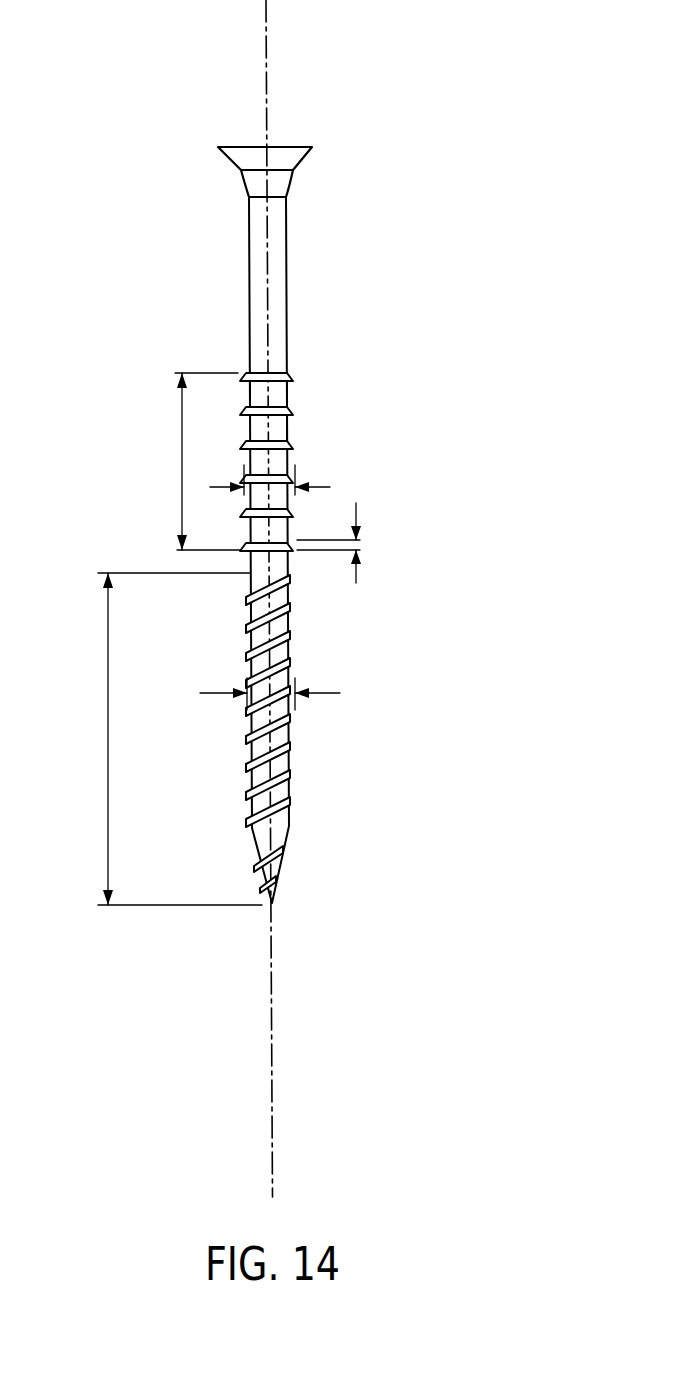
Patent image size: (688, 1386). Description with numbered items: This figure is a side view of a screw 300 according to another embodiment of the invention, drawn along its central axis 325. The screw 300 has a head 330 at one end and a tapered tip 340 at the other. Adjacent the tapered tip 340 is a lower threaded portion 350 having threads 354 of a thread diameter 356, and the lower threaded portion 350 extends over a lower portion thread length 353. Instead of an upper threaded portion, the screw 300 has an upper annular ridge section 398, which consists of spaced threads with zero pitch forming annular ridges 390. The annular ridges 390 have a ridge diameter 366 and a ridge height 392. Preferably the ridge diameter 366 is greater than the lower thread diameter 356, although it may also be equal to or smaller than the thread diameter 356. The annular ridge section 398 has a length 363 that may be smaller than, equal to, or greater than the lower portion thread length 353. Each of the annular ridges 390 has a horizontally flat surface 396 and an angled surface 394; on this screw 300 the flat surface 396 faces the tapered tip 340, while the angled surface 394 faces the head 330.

The screw 300 is at (484, 281).
The longitudinal axis 325 is at (273, 1032).
The head 330 is at (298, 146).
The tapered tip 340 is at (272, 874).
The lower threaded portion 350 is at (277, 757).
The lower portion thread length 353 is at (108, 738).
The threads 354 is at (290, 797).
The thread diameter 356 is at (213, 694).
The length 363 is at (182, 452).
The ridge diameter 366 is at (315, 487).
The annular ridges 390 is at (286, 376).
The ridge height 392 is at (357, 516).
The angled surface 394 is at (290, 410).
The horizontally flat surface 396 is at (291, 416).
The upper annular ridge section 398 is at (262, 393).